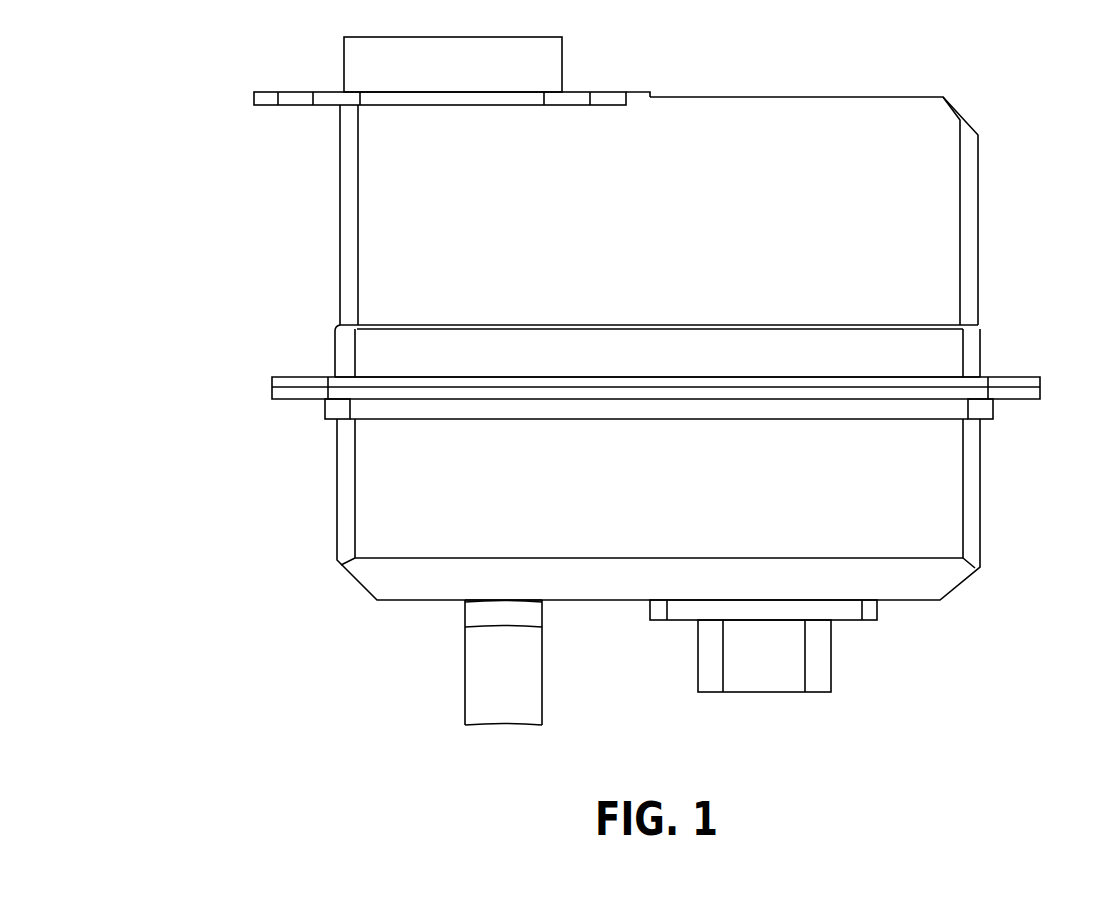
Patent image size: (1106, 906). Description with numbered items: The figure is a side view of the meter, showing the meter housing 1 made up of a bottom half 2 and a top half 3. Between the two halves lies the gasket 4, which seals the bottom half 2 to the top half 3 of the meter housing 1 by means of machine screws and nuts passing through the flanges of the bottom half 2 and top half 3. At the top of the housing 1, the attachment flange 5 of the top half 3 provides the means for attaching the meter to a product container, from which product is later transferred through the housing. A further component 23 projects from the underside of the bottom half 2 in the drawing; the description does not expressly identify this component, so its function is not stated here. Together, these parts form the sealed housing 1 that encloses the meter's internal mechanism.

The meter housing 1 is at (845, 203).
The bottom half 2 is at (930, 473).
The top half 3 is at (937, 290).
The gasket 4 is at (1040, 390).
The attachment flange 5 is at (268, 106).
The cylindrical connector 23 is at (542, 670).